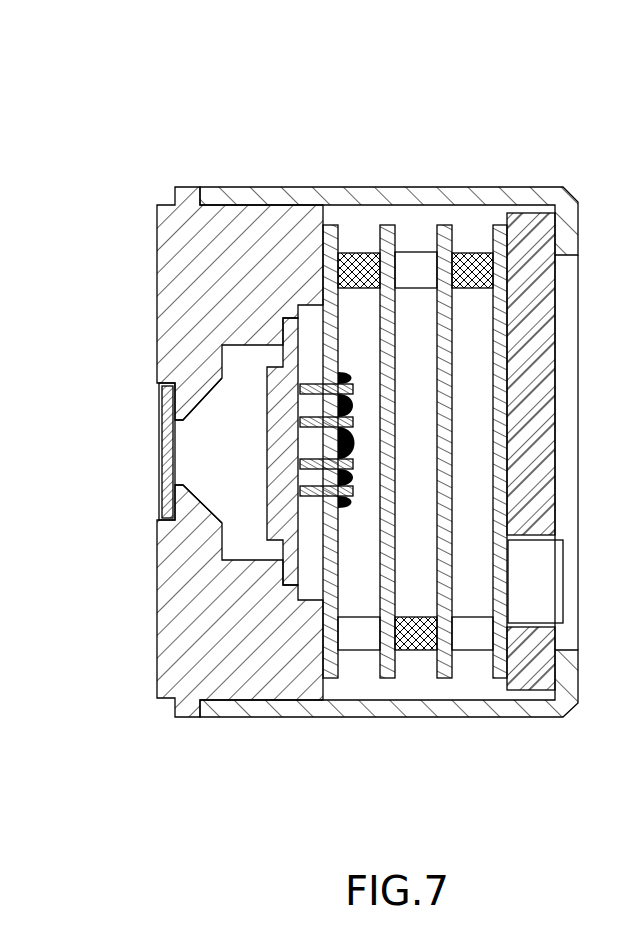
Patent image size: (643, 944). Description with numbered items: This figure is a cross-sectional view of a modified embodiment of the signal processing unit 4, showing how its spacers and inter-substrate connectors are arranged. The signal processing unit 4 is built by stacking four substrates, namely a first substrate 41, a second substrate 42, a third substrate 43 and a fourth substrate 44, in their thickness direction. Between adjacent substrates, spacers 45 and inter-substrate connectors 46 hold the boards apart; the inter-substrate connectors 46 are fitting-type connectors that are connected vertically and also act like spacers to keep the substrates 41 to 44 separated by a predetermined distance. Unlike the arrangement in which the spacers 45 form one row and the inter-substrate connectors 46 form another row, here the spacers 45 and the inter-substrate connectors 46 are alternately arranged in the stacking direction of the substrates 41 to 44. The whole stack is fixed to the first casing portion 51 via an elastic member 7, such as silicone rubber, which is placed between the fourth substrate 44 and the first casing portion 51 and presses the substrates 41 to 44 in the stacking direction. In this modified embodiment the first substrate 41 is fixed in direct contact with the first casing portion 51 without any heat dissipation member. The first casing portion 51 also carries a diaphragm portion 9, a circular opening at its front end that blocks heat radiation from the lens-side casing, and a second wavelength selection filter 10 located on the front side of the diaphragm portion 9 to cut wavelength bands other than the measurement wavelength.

The signal processing unit 4 is at (495, 65).
The first substrate 41 is at (330, 225).
The second substrate 42 is at (388, 225).
The third substrate 43 is at (444, 225).
The fourth substrate 44 is at (500, 225).
The spacer 45 is at (417, 290).
The inter-substrate connector 46 is at (360, 292).
The elastic member 7 is at (550, 396).
The diaphragm portion 9 is at (182, 402).
The second wavelength selection filter 10 is at (162, 452).
The first casing portion 51 is at (157, 588).